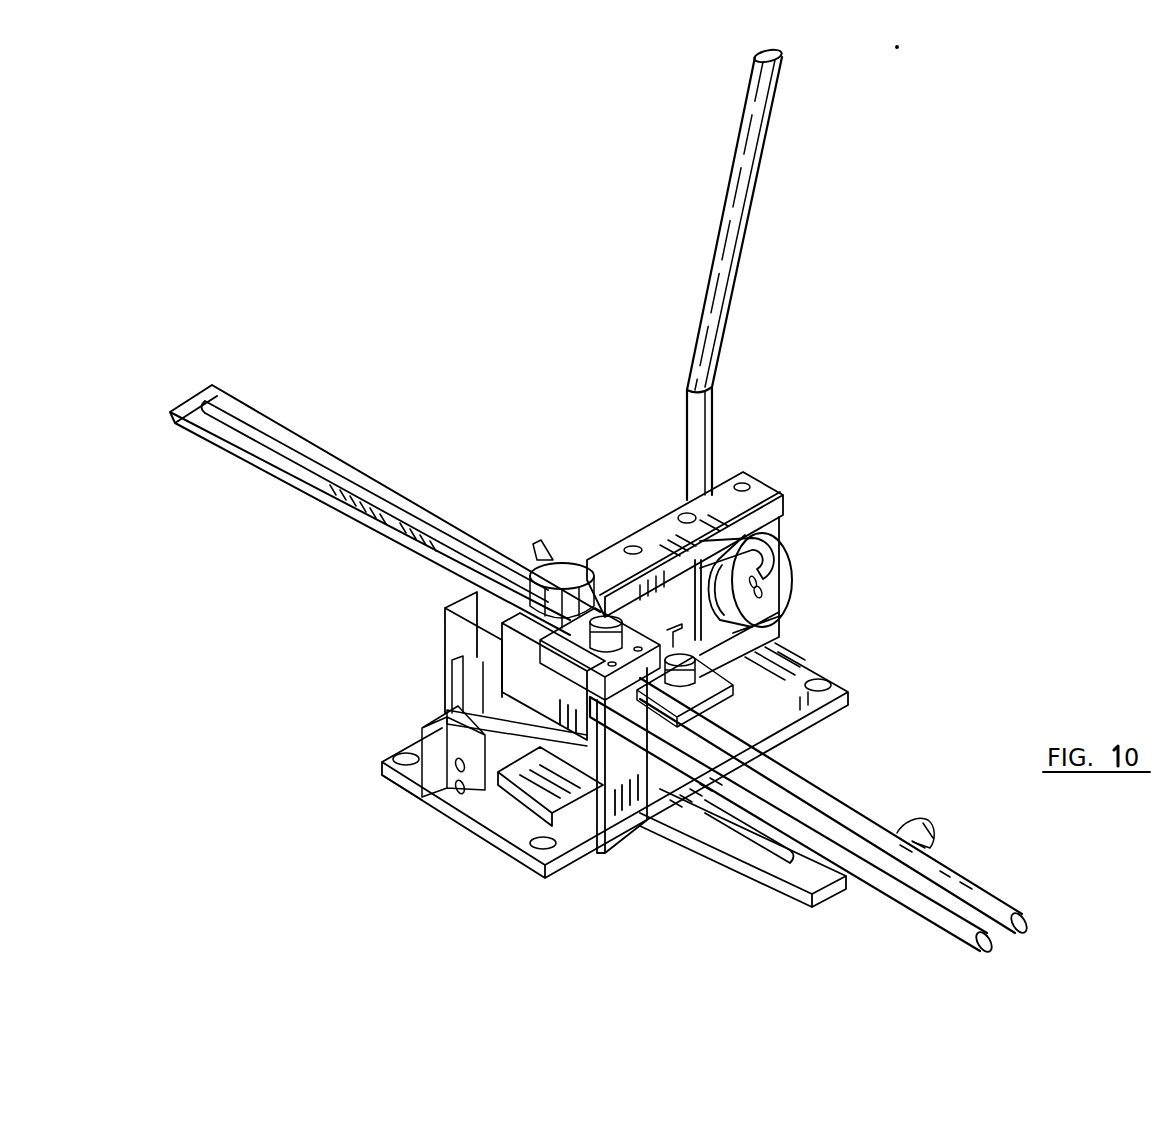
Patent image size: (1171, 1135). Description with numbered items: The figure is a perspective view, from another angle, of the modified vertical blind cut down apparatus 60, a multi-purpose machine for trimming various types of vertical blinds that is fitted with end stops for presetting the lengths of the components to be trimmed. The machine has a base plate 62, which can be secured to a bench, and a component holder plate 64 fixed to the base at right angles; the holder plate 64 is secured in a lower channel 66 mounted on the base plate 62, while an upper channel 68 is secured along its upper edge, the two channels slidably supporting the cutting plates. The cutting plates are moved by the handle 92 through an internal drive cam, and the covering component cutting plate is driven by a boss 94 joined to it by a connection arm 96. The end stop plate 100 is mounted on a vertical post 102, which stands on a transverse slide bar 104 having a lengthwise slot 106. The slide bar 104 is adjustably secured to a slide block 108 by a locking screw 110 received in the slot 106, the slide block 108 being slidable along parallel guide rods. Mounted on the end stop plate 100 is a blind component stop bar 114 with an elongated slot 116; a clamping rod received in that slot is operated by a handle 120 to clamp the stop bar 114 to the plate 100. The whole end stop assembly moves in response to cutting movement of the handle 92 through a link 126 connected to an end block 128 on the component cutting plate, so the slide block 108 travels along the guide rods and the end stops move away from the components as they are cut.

The modified vertical blind cut down apparatus 60 is at (915, 398).
The base plate 62 is at (815, 656).
The component holder plate 64 is at (450, 676).
The lower channel 66 is at (470, 803).
The upper channel 68 is at (757, 491).
The handle 92 is at (735, 229).
The boss 94 is at (790, 583).
The connection arm 96 is at (770, 578).
The end stop plate 100 is at (469, 903).
The vertical post 102 is at (622, 775).
The transverse slide bar 104 is at (365, 482).
The lengthwise slot 106 is at (272, 438).
The slide block 108 is at (338, 625).
The locking screw 110 is at (546, 556).
The blind component stop bar 114 is at (790, 868).
The elongated slot 116 is at (760, 838).
The handle 120 is at (558, 546).
The link 126 is at (338, 685).
The end block 128 is at (338, 715).